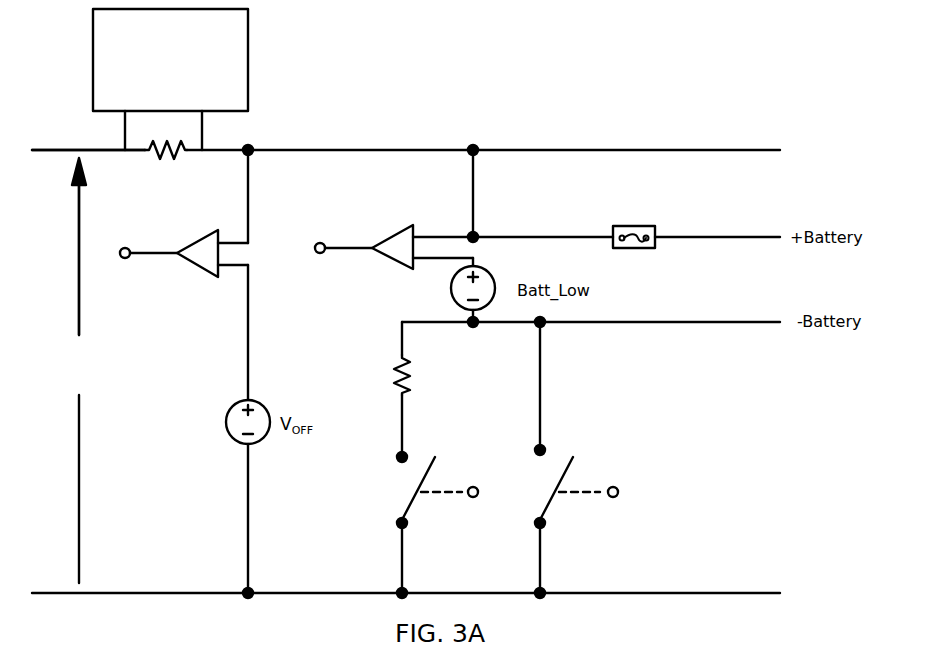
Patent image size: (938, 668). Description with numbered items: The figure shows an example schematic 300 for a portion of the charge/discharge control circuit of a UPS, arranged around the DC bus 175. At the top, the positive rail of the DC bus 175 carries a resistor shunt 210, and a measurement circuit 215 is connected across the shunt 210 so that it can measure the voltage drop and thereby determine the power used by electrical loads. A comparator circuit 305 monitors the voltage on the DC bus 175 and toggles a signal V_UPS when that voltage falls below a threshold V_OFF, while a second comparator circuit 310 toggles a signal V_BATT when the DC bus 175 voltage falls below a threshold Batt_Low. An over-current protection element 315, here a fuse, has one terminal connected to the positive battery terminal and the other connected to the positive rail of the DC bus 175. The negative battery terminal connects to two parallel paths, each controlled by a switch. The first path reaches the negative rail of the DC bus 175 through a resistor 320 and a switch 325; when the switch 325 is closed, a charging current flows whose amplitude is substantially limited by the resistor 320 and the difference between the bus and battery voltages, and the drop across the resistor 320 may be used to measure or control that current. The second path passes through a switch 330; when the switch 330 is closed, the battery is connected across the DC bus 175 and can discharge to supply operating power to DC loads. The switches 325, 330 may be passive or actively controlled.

The DC bus 175 is at (79, 283).
The resistor shunt 210 is at (170, 158).
The measurement circuit 215 is at (170, 79).
The schematic 300 is at (661, 132).
The comparator circuit 305 is at (202, 240).
The comparator circuit 310 is at (400, 232).
The over-current protection element 315 is at (640, 226).
The resistor 320 is at (396, 374).
The switch 325 is at (394, 488).
The switch 330 is at (539, 491).